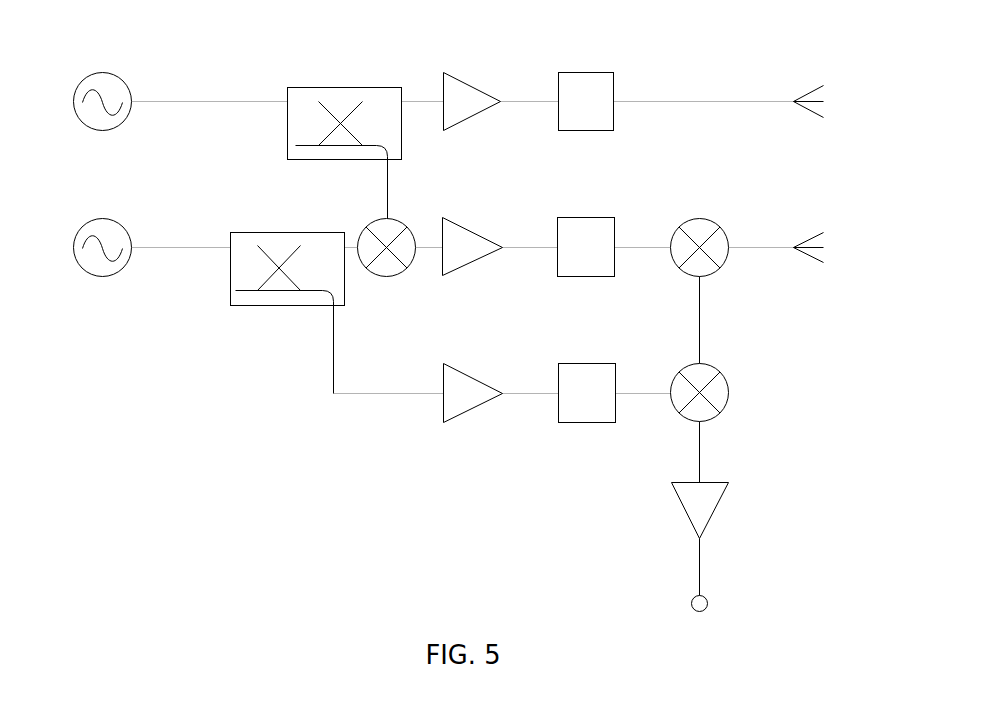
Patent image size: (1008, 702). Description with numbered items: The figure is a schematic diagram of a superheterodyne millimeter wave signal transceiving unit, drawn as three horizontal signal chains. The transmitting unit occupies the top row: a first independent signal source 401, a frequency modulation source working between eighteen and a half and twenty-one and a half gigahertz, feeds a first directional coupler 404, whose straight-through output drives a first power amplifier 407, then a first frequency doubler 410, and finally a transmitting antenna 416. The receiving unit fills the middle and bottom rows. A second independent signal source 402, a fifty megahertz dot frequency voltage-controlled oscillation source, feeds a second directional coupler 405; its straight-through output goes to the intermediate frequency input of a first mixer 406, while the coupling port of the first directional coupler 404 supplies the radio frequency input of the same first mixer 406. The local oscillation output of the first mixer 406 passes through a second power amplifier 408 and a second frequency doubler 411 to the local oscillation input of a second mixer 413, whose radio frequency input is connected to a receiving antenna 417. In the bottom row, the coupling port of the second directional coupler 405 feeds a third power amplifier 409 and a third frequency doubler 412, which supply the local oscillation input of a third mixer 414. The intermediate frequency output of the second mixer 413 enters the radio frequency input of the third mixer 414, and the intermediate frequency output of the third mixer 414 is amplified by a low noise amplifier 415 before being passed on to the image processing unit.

The first independent signal source 401 is at (103, 70).
The second independent signal source 402 is at (102, 277).
The first directional coupler 404 is at (343, 87).
The second directional coupler 405 is at (287, 305).
The first mixer 406 is at (385, 277).
The first power amplifier 407 is at (473, 82).
The second power amplifier 408 is at (470, 263).
The third power amplifier 409 is at (475, 408).
The first frequency doubler 410 is at (585, 72).
The second frequency doubler 411 is at (585, 276).
The third frequency doubler 412 is at (585, 422).
The second mixer 413 is at (685, 276).
The third mixer 414 is at (724, 410).
The low noise amplifier 415 is at (715, 510).
The transmitting antenna 416 is at (793, 101).
The receiving antenna 417 is at (807, 253).